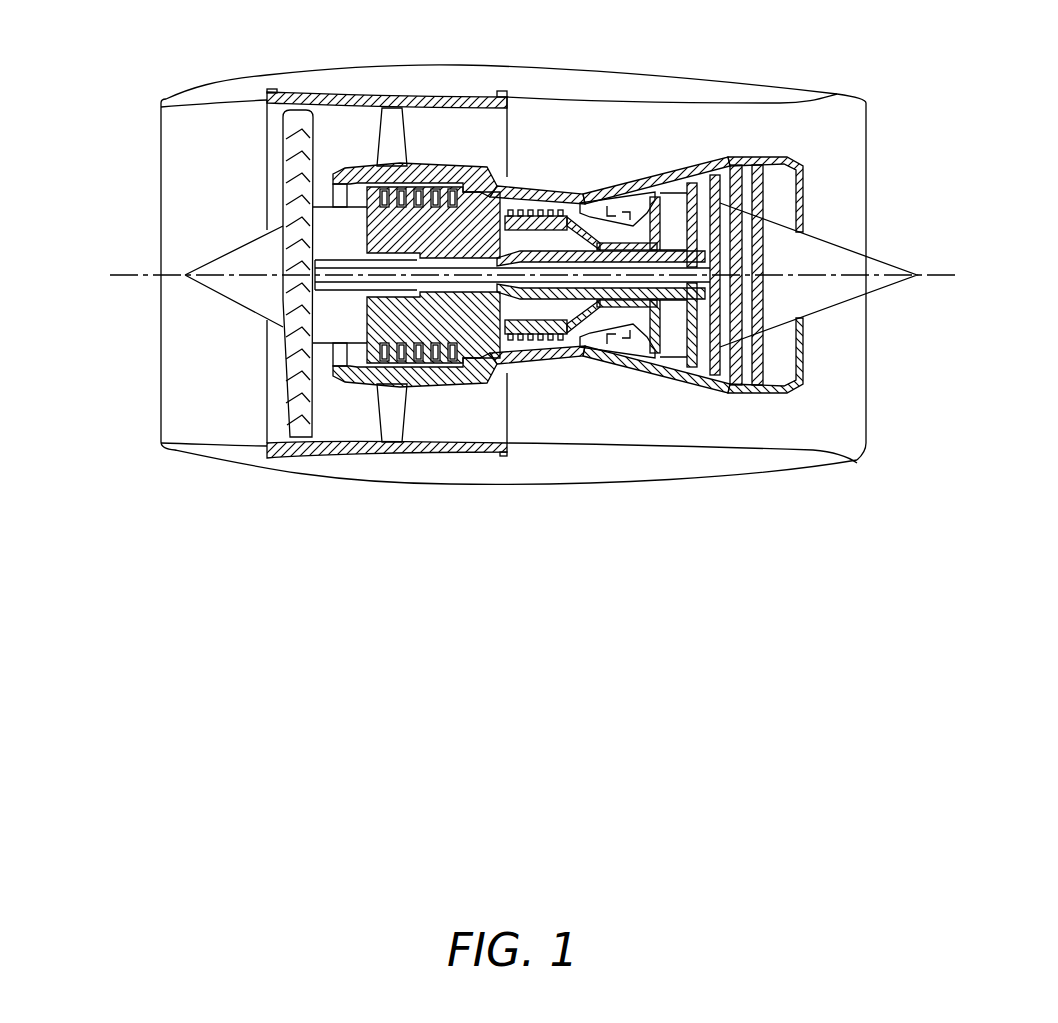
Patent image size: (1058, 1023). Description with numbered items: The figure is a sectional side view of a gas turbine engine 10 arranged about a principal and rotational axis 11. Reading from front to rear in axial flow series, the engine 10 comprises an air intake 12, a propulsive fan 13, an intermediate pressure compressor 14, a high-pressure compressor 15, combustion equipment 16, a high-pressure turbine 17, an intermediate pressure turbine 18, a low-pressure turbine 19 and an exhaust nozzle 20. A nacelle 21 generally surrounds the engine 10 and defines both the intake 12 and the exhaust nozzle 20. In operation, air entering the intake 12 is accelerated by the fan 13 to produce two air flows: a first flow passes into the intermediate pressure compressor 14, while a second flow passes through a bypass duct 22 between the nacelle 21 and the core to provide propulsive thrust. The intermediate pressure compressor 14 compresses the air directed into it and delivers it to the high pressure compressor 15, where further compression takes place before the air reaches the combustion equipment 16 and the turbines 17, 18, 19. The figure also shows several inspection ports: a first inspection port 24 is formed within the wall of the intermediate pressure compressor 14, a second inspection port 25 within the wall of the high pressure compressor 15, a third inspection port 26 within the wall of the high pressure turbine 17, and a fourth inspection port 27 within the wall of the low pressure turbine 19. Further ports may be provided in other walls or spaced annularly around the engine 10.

The gas turbine engine 10 is at (501, 286).
The principal and rotational axis 11 is at (125, 275).
The air intake 12 is at (213, 104).
The propulsive fan 13 is at (283, 395).
The intermediate pressure compressor 14 is at (413, 362).
The high-pressure compressor 15 is at (530, 192).
The combustion equipment 16 is at (598, 342).
The high-pressure turbine 17 is at (653, 352).
The intermediate pressure turbine 18 is at (690, 177).
The low-pressure turbine 19 is at (715, 368).
The exhaust nozzle 20 is at (873, 448).
The nacelle 21 is at (414, 66).
The bypass duct 22 is at (469, 151).
The first inspection port 24 is at (445, 381).
The second inspection port 25 is at (540, 360).
The third inspection port 26 is at (668, 368).
The fourth inspection port 27 is at (743, 391).